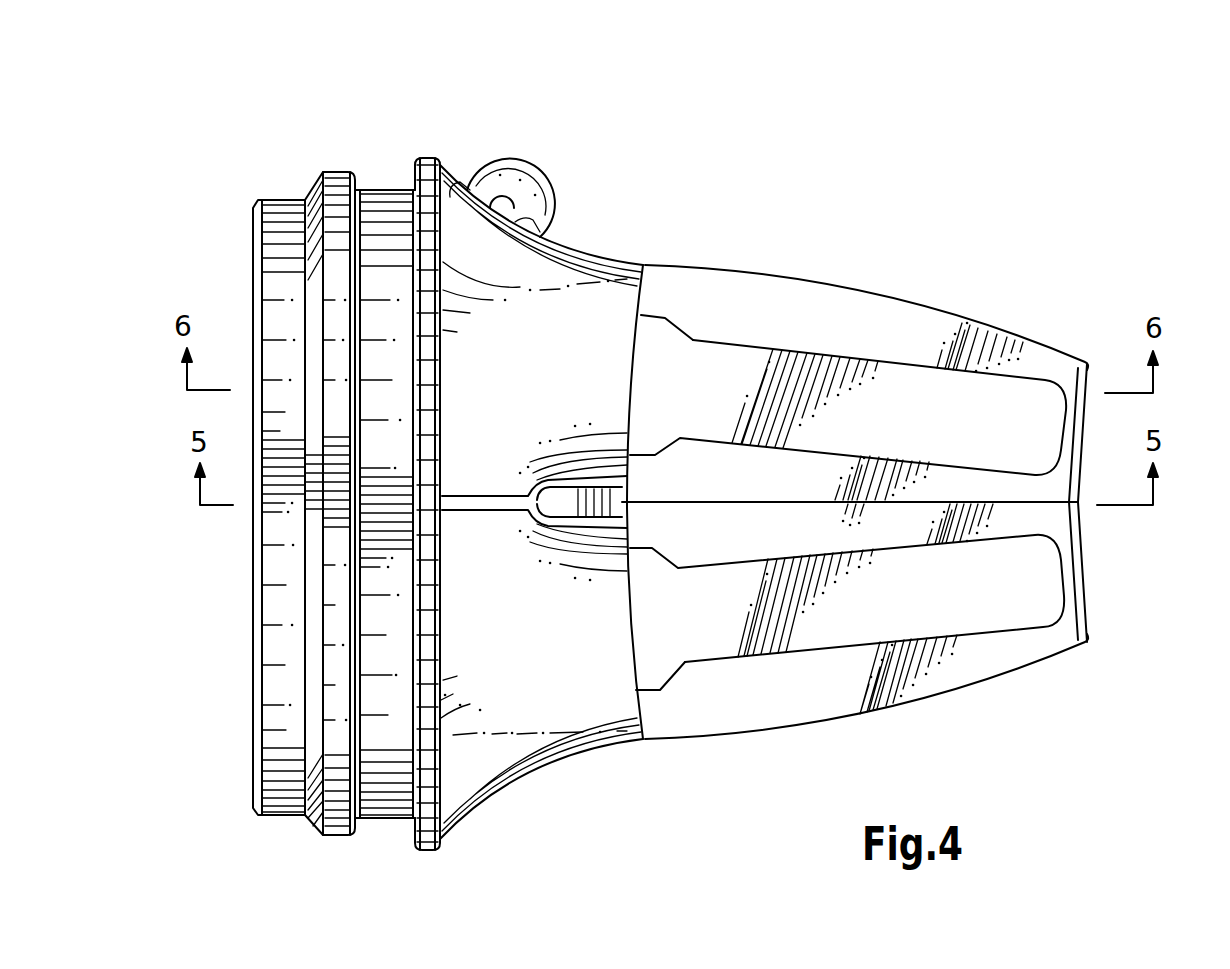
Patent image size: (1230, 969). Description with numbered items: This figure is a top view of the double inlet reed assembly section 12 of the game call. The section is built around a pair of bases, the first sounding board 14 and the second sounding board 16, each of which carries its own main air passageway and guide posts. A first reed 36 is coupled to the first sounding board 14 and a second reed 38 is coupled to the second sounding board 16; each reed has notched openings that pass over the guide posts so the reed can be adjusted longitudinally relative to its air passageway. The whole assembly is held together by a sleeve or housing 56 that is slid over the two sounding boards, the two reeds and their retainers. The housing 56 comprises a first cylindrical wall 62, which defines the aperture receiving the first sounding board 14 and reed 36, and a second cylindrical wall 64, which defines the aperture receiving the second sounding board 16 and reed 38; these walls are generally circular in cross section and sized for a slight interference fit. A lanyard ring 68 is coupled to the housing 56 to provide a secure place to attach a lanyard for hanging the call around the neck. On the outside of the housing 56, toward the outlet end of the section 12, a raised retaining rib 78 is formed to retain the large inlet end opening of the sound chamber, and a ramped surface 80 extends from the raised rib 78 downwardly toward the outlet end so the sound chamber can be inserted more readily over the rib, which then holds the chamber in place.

The double inlet reed assembly section 12 is at (695, 153).
The first sounding board 14 is at (1002, 682).
The second sounding board 16 is at (906, 300).
The first reed 36 is at (955, 606).
The second reed 38 is at (964, 434).
The housing 56 is at (610, 258).
The first cylindrical wall 62 is at (655, 722).
The second cylindrical wall 64 is at (645, 290).
The lanyard ring 68 is at (527, 170).
The raised retaining rib 78 is at (336, 175).
The ramped surface 80 is at (310, 627).